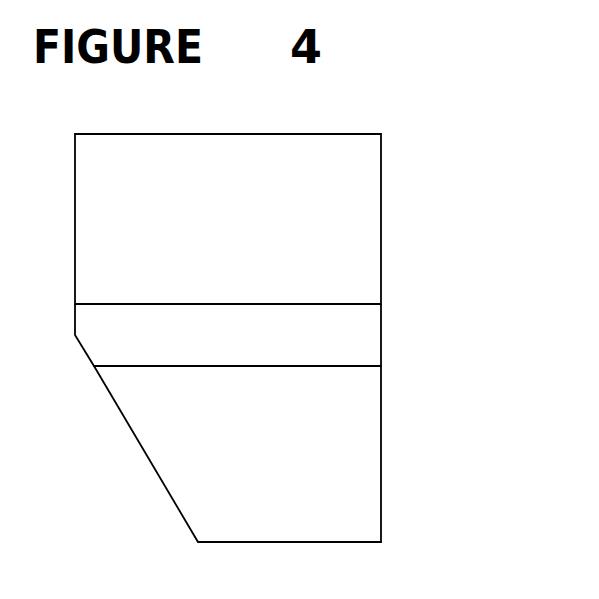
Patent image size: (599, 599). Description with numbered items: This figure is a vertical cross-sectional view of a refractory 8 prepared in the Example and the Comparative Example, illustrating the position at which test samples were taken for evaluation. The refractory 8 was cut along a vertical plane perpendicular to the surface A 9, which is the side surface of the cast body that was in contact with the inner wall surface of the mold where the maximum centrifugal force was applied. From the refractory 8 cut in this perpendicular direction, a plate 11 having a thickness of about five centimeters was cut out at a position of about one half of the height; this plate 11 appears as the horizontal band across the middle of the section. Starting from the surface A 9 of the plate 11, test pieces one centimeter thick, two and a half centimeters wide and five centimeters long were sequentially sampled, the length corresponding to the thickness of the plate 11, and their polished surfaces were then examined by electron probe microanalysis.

The refractory 8 is at (298, 133).
The plate 11 is at (345, 332).
The surface A 9 is at (382, 448).